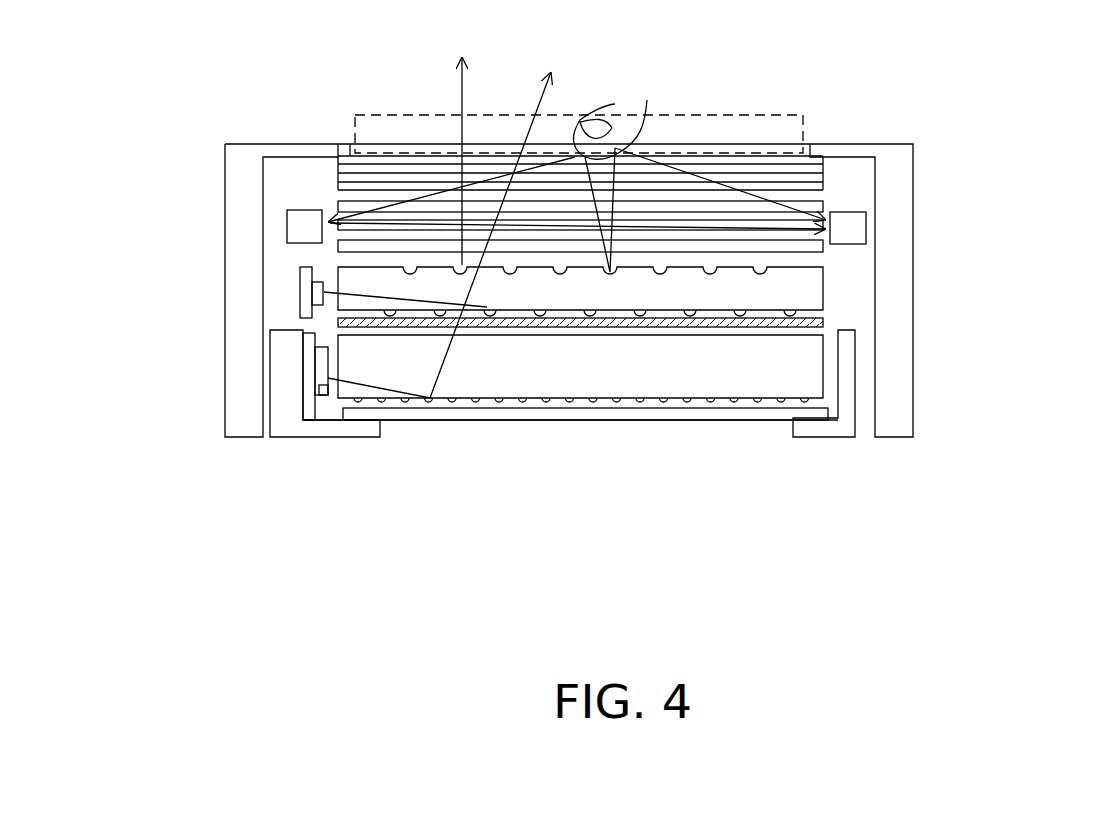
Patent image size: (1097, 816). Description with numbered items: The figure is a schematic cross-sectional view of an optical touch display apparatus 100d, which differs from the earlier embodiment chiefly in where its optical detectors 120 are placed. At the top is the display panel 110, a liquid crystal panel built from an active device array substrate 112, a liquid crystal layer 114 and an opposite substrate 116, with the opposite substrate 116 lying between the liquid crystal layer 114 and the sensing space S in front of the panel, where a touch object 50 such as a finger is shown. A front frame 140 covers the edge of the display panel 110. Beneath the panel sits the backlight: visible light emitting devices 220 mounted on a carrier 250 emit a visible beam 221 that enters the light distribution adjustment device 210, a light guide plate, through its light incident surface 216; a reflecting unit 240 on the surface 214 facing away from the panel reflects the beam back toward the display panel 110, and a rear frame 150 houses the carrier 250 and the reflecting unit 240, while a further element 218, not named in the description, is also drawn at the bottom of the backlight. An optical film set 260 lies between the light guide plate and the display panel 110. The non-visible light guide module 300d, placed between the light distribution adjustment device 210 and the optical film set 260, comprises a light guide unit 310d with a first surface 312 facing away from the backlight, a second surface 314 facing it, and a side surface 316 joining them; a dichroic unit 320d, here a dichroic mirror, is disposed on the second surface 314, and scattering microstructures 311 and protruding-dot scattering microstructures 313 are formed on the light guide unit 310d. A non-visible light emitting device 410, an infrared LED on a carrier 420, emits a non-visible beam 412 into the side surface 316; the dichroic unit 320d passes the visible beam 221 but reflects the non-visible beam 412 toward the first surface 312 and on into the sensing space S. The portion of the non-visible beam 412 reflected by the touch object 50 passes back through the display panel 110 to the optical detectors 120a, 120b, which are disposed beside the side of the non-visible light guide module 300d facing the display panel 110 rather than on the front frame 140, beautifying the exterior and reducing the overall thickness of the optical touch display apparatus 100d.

The optical touch display apparatus 100d is at (1059, 546).
The display panel 110 is at (176, 85).
The active device array substrate 112 is at (343, 181).
The liquid crystal layer 114 is at (343, 172).
The opposite substrate 116 is at (347, 162).
The optical detectors 120 is at (486, 172).
The optical detector 120a is at (857, 210).
The optical detector 120b is at (287, 228).
The front frame 140 is at (905, 160).
The rear frame 150 is at (362, 432).
The light distribution adjustment device 210 is at (805, 382).
The surface 214 is at (750, 405).
The light incident surface 216 is at (320, 392).
The back plate 218 is at (573, 413).
The visible light emitting device 220 is at (333, 396).
The visible beam 221 is at (393, 394).
The reflecting unit 240 is at (467, 421).
The carrier 250 is at (308, 368).
The optical film set 260 is at (318, 200).
The non-visible light guide module 300d is at (999, 245).
The light guide unit 310d is at (815, 283).
The scattering microstructures 311 is at (760, 268).
The first surface 312 is at (807, 266).
The scattering microstructures 313 is at (795, 329).
The second surface 314 is at (760, 322).
The side surface 316 is at (337, 304).
The dichroic unit 320d is at (825, 323).
The non-visible light emitting device 410 is at (300, 268).
The non-visible beam 412 is at (400, 130).
The carrier 420 is at (312, 293).
The touch object 50 is at (608, 106).
The sensing space S is at (428, 108).